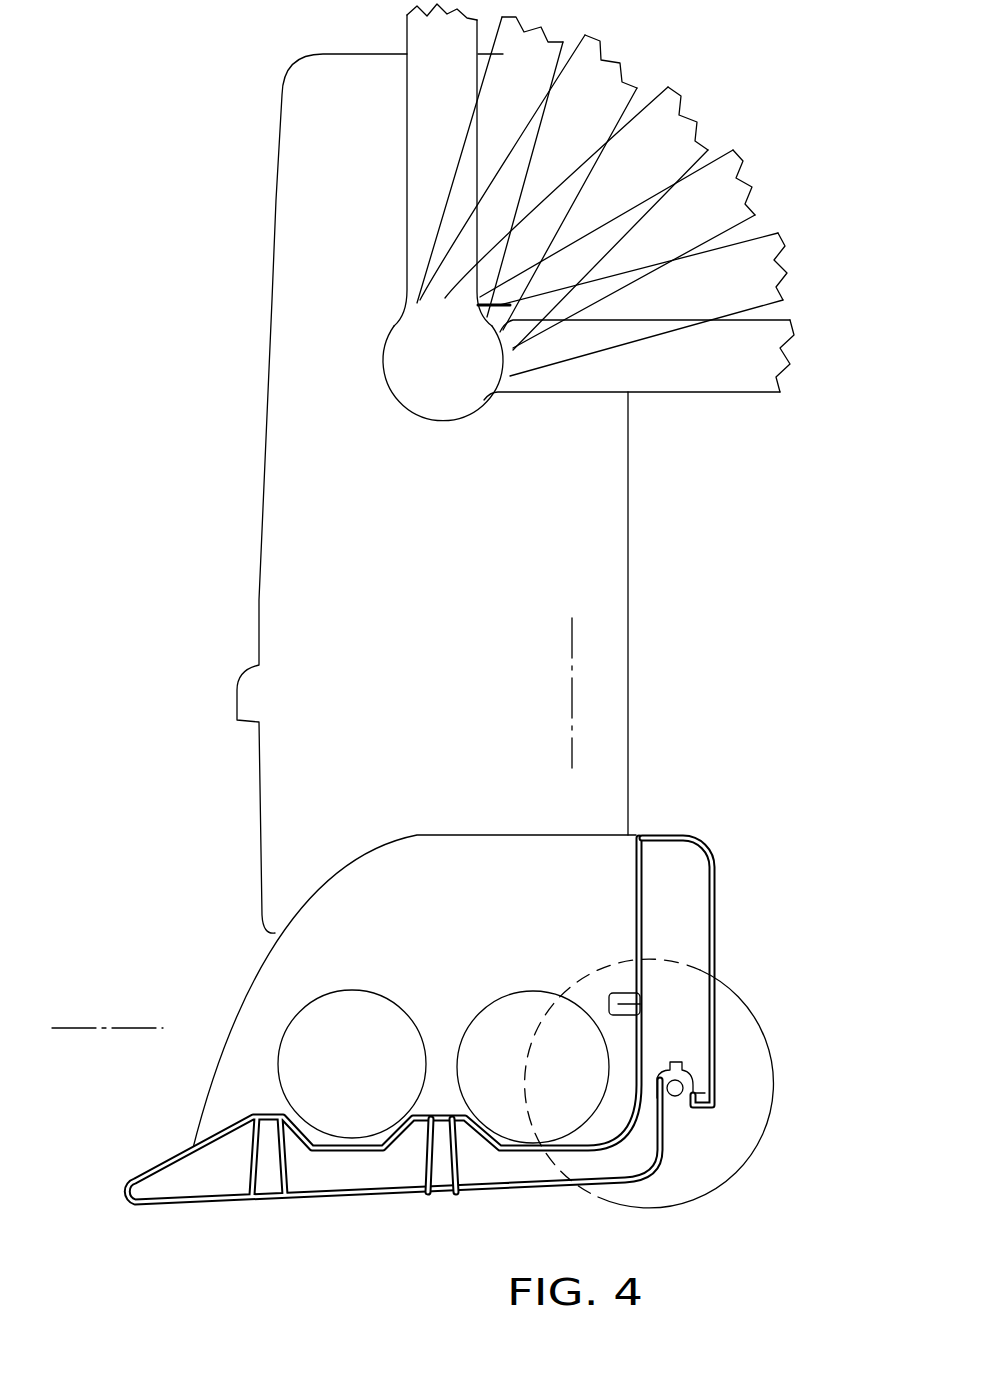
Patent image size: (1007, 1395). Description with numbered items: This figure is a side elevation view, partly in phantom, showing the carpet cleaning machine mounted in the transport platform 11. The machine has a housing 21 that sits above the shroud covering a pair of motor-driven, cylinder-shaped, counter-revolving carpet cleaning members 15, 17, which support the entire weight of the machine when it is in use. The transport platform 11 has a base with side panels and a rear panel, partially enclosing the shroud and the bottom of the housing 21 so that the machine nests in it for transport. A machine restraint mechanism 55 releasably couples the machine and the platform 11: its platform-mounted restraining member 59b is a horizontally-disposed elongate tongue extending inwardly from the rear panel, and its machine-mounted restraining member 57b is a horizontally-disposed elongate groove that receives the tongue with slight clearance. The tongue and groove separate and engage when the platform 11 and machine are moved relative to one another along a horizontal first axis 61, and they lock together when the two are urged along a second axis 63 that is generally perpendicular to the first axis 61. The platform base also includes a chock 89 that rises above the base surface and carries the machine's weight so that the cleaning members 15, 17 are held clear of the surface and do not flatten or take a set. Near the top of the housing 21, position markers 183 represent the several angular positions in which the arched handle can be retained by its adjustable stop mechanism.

The position markers 183 is at (678, 108).
The housing 21 is at (615, 575).
The second axis 63 is at (572, 640).
The first axis 61 is at (62, 1030).
The transport platform 11 is at (160, 1168).
The chock 89 is at (426, 1120).
The machine restraint mechanism 55 is at (686, 904).
The machine-mounted restraining member 57b is at (637, 993).
The platform-mounted restraining member 59b is at (640, 1003).
The carpet cleaning member 17 is at (550, 998).
The carpet cleaning member 15 is at (283, 1097).